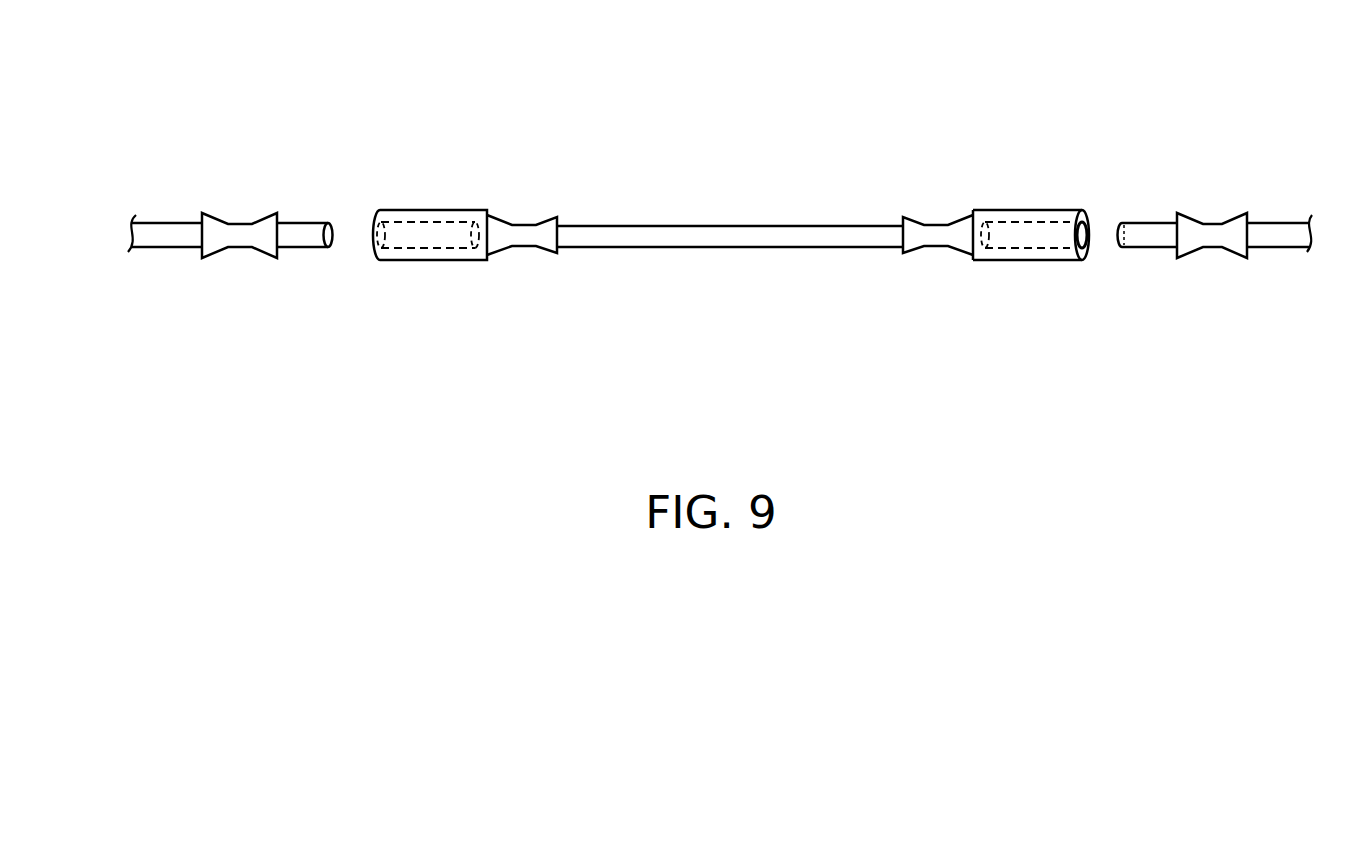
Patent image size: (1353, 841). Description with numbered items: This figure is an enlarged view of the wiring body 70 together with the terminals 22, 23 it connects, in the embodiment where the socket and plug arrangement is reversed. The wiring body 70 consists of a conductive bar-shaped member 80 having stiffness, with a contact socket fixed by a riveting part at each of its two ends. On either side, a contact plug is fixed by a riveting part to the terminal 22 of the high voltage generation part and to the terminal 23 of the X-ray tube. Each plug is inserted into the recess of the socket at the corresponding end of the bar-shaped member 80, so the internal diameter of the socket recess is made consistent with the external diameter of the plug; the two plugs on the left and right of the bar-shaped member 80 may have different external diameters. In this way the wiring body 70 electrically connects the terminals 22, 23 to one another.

The wiring body 70 is at (724, 123).
The bar-shaped member 80 is at (733, 233).
The terminal 22 is at (168, 236).
The terminal 23 is at (1280, 240).